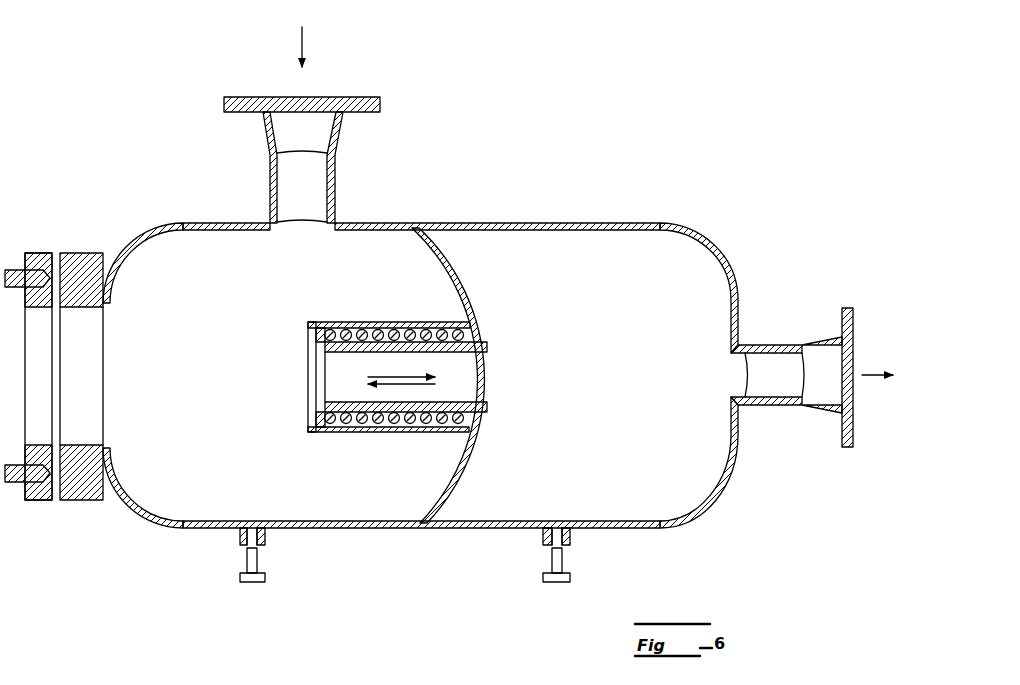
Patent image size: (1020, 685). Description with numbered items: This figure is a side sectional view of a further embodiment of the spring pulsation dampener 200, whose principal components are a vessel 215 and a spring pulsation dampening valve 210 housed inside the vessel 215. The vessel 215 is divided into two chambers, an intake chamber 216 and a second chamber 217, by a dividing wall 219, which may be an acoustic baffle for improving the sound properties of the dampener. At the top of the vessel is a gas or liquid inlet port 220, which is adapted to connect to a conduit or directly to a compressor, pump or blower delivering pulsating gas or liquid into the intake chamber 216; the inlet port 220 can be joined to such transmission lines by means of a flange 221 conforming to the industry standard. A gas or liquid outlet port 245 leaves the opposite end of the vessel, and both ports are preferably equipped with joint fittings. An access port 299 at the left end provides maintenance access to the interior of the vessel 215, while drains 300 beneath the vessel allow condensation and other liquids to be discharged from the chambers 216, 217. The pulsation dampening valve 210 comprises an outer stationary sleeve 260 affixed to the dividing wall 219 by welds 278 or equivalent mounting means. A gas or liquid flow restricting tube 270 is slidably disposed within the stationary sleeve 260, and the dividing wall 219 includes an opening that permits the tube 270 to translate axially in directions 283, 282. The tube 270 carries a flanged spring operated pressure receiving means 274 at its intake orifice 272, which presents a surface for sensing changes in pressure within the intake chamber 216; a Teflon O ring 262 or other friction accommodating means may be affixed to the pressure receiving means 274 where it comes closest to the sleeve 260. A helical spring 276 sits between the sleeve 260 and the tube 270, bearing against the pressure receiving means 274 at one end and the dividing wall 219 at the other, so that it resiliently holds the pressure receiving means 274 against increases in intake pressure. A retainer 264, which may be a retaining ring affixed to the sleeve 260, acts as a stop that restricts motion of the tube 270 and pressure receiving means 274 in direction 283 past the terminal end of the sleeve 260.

The spring pulsation dampener 200 is at (371, 311).
The spring pulsation dampening valve 210 is at (384, 355).
The vessel 215 is at (122, 504).
The intake chamber 216 is at (172, 246).
The chamber 217 is at (668, 254).
The dividing wall 219 is at (456, 284).
The gas or liquid inlet port 220 is at (305, 125).
The flange 221 is at (370, 110).
The gas or liquid outlet port 245 is at (858, 368).
The outer stationary sleeve 260 is at (356, 322).
The 'O' ring 262 is at (328, 432).
The retainer 264 is at (310, 333).
The gas or liquid flow restricting tube 270 is at (486, 396).
The intake orifice 272 is at (308, 373).
The spring operated pressure receiving means 274 is at (312, 420).
The helical spring 276 is at (396, 432).
The welds 278 is at (452, 318).
The direction 282 is at (368, 384).
The direction 283 is at (438, 382).
The access port 299 is at (40, 252).
The drains 300 is at (240, 548).